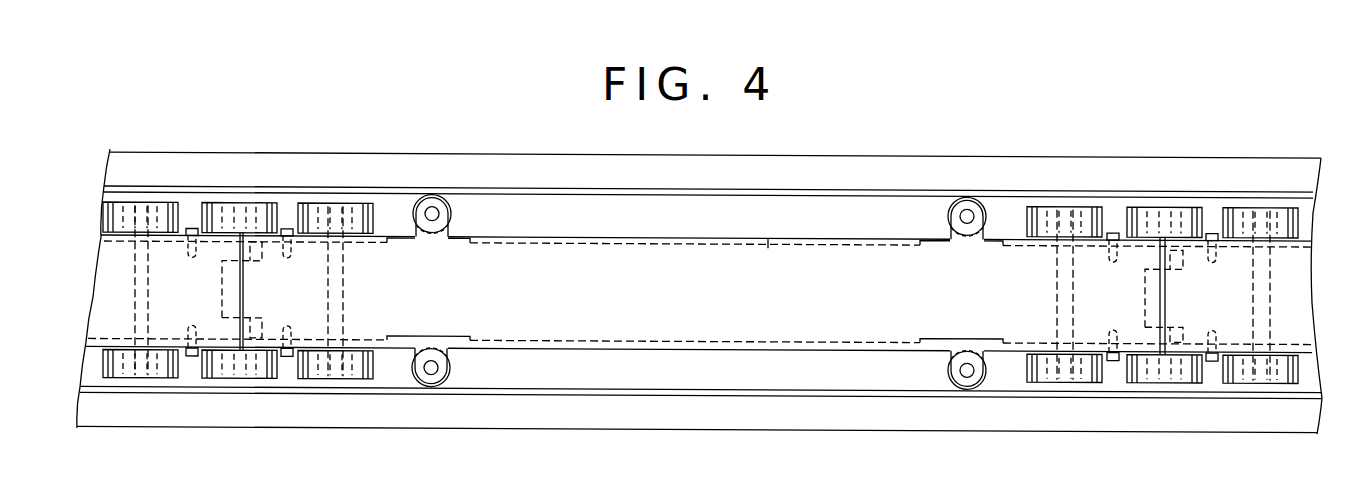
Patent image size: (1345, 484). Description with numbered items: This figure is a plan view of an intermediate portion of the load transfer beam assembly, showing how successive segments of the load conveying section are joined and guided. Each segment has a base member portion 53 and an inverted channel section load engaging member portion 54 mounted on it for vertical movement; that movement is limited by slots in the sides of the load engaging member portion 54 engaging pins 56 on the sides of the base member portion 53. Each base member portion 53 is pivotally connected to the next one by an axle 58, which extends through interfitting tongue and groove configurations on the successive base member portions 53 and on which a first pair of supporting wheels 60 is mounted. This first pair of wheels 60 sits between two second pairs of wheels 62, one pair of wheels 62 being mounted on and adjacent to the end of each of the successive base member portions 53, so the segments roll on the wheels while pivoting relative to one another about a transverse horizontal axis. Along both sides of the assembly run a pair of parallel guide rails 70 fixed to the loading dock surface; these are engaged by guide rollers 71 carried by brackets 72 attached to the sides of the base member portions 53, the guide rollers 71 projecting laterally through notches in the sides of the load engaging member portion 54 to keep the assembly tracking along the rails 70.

The base member portion 53 is at (768, 245).
The load engaging member portion 54 is at (752, 304).
The pins 56 is at (283, 358).
The axle 58 is at (250, 280).
The first pair of supporting wheels 60 is at (1138, 206).
The second pairs of wheels 62 is at (1043, 206).
The guide rails 70 is at (538, 189).
The guide rollers 71 is at (452, 208).
The brackets 72 is at (427, 381).